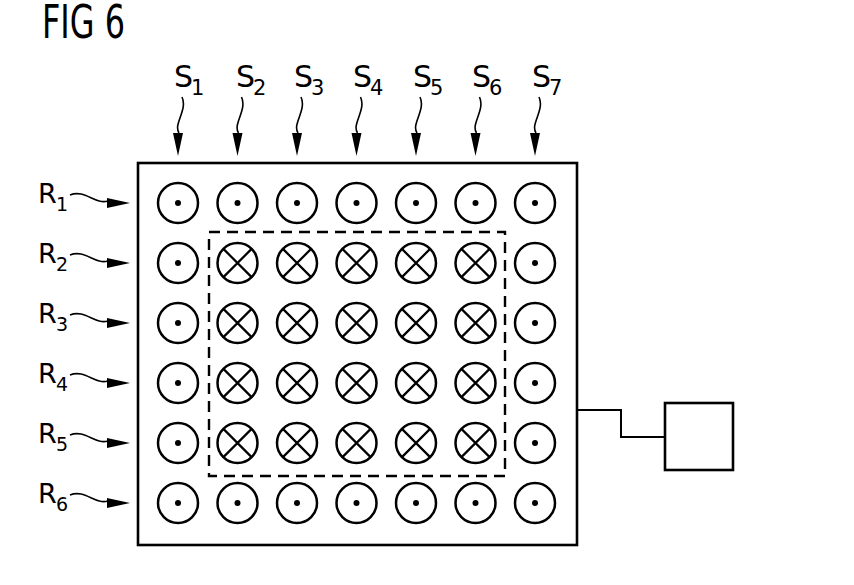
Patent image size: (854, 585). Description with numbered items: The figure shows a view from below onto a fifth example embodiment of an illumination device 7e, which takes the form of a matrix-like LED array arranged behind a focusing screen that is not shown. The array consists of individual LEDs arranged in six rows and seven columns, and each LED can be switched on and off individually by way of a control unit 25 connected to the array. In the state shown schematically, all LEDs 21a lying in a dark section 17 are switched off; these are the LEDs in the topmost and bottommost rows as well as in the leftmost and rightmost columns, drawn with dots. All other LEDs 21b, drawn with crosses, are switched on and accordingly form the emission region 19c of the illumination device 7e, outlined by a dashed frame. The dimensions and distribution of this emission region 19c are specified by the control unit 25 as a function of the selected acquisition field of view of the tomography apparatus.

The illumination device 7e is at (437, 354).
The dark section 17 is at (385, 354).
The LED 21a is at (549, 199).
The LED 21b is at (486, 262).
The emission region 19c is at (505, 295).
The control unit 25 is at (698, 470).